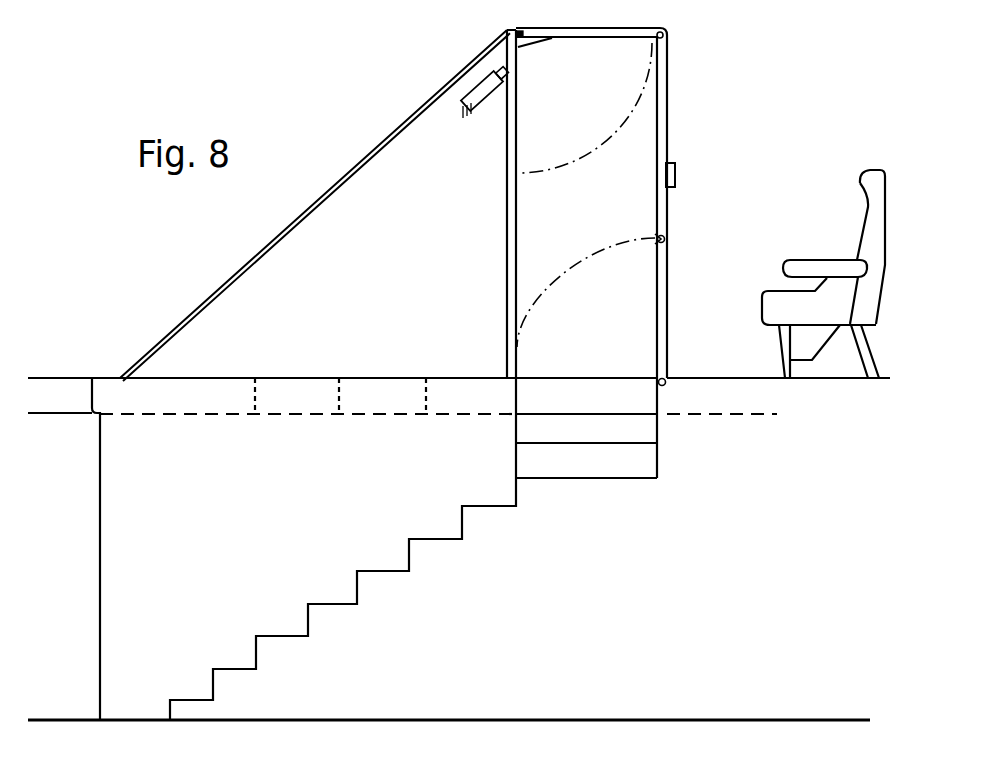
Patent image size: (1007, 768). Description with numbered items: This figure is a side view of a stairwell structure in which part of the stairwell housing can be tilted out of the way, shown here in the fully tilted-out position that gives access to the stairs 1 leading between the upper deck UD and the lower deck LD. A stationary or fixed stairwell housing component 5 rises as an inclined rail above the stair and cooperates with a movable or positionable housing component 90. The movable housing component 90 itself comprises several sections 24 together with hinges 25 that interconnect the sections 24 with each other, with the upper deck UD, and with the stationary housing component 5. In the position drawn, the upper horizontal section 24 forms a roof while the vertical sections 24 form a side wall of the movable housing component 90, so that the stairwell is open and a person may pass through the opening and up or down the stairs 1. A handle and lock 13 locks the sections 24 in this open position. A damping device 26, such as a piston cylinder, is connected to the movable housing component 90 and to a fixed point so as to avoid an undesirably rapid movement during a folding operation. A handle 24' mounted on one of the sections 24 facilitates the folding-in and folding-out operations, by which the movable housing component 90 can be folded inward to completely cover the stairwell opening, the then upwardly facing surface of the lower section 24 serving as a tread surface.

The stairs 1 is at (437, 539).
The stationary stairwell housing component 5 is at (326, 211).
The handle and lock 13 is at (663, 236).
The sections 24 is at (616, 203).
The handle 24' is at (703, 180).
The hinges 25 is at (657, 40).
The damping device 26 is at (483, 102).
The movable housing component 90 is at (685, 63).
The upper deck UD is at (773, 380).
The lower deck LD is at (627, 718).